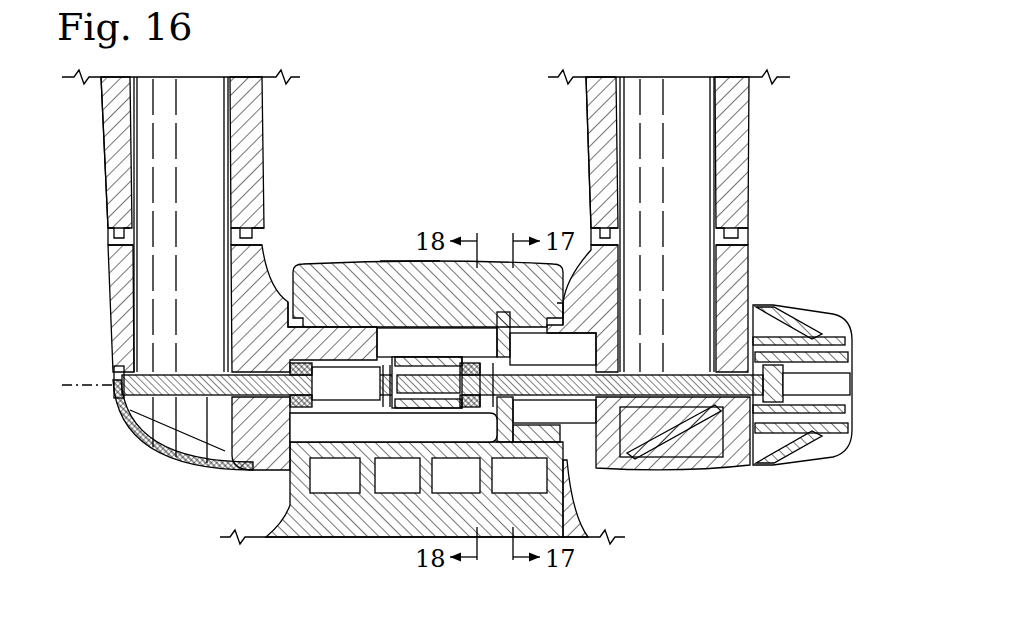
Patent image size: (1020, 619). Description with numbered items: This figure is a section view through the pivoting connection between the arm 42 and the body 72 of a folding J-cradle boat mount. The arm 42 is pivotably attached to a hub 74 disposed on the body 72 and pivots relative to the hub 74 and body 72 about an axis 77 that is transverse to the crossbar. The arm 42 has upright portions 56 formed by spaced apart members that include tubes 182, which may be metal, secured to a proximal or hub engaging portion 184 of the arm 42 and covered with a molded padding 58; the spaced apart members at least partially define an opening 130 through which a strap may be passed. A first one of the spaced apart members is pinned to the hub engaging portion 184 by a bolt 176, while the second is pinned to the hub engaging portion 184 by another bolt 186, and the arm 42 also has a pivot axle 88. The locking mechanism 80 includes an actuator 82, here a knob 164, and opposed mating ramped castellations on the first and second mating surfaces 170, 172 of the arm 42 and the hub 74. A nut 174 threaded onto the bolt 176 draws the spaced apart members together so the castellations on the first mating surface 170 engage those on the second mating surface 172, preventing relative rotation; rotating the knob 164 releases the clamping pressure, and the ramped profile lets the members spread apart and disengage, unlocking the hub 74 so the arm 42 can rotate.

The opening 130 is at (499, 86).
The upright portion 56 is at (265, 110).
The padding 58 is at (240, 160).
The arm 42 is at (748, 184).
The tube 182 is at (216, 133).
The hub engaging portion 184 is at (115, 350).
The locking mechanism 80 is at (313, 256).
The body 72 is at (358, 263).
The hub 74 is at (403, 246).
The first mating surface 170 is at (283, 300).
The second mating surface 172 is at (296, 463).
The pivot axle 88 is at (400, 426).
The nut 174 is at (473, 410).
The bolt 186 is at (203, 394).
The axis 77 is at (100, 395).
The bolt 176 is at (697, 393).
The actuator 82 is at (793, 307).
The knob 164 is at (832, 316).